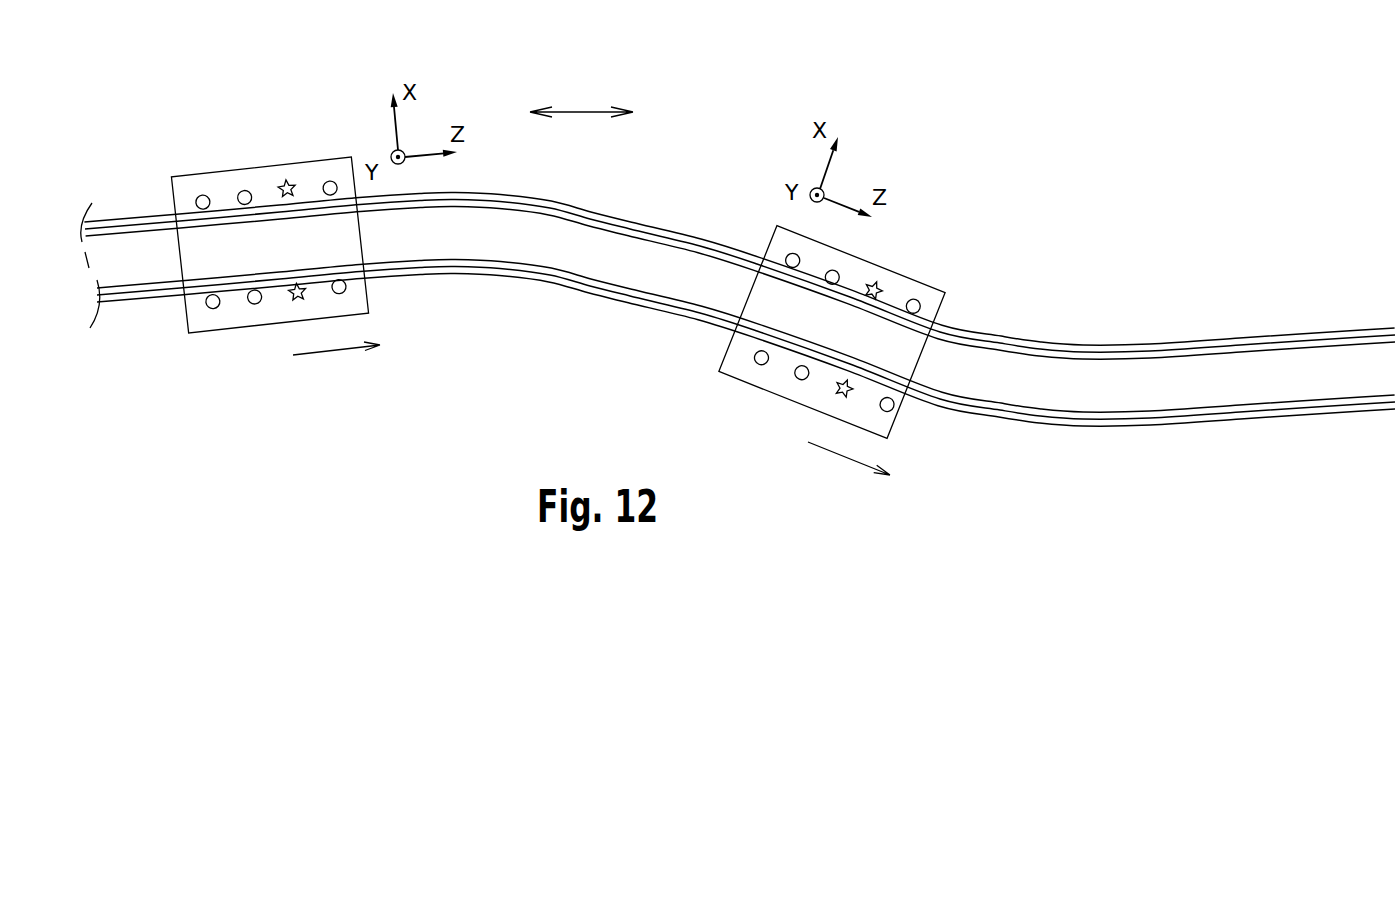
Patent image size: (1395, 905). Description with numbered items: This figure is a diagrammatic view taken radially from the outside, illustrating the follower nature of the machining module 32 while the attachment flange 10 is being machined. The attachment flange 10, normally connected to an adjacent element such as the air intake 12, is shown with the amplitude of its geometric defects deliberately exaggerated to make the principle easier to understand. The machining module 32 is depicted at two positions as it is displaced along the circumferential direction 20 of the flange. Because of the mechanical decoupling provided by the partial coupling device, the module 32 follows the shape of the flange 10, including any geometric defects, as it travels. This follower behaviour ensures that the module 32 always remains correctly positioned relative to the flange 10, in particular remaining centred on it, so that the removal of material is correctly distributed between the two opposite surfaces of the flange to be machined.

The attachment flange 10 is at (738, 309).
The air intake 12 is at (1103, 390).
The circumferential direction 20 is at (590, 112).
The machining module 32 is at (272, 130).